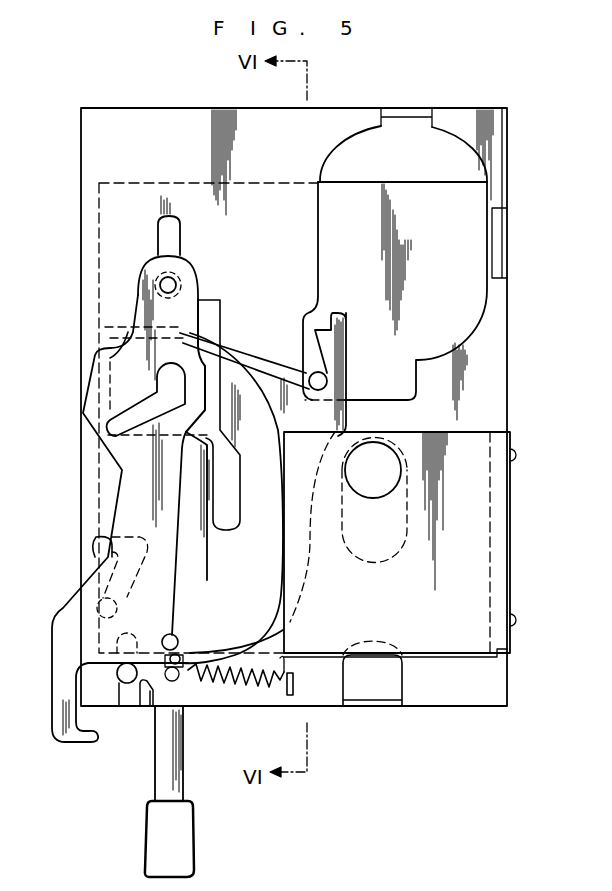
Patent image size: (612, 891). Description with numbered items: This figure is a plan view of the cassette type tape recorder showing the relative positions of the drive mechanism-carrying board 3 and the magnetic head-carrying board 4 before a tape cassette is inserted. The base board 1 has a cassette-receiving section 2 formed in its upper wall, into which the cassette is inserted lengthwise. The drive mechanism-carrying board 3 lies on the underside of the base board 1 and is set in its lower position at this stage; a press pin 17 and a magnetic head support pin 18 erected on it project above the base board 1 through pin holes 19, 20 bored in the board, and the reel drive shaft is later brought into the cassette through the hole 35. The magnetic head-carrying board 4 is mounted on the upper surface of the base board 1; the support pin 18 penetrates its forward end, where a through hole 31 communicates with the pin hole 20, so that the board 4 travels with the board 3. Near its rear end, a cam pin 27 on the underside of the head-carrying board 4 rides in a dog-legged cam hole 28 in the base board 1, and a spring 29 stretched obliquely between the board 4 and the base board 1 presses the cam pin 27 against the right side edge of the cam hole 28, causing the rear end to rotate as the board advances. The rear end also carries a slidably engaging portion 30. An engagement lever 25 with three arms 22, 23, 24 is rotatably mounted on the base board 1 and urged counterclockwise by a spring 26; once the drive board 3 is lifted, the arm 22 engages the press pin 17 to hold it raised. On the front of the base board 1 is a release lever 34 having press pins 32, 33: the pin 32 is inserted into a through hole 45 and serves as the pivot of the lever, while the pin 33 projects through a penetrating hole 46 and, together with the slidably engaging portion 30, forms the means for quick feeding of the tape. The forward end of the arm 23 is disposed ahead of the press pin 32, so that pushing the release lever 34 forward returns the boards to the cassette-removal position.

The base board 1 is at (80, 297).
The cassette-receiving section 2 is at (466, 652).
The drive mechanism-carrying board 3 is at (421, 182).
The magnetic head-carrying board 4 is at (92, 376).
The press pin 17 is at (309, 373).
The magnetic head support pin 18 is at (177, 279).
The pin hole 19 is at (358, 152).
The pin hole 20 is at (215, 305).
The arm 22 is at (323, 322).
The arm 23 is at (236, 650).
The arm 24 is at (214, 334).
The engagement lever 25 is at (281, 581).
The spring 26 is at (292, 676).
The cam pin 27 is at (117, 608).
The cam hole 28 is at (93, 546).
The spring 29 is at (268, 688).
The slidably engaging portion 30 is at (78, 742).
The through hole 31 is at (137, 406).
The press pin 32 is at (182, 676).
The press pin 33 is at (125, 696).
The release lever 34 is at (153, 831).
The hole 35 is at (386, 560).
The through hole 45 is at (176, 636).
The penetrating hole 46 is at (133, 692).